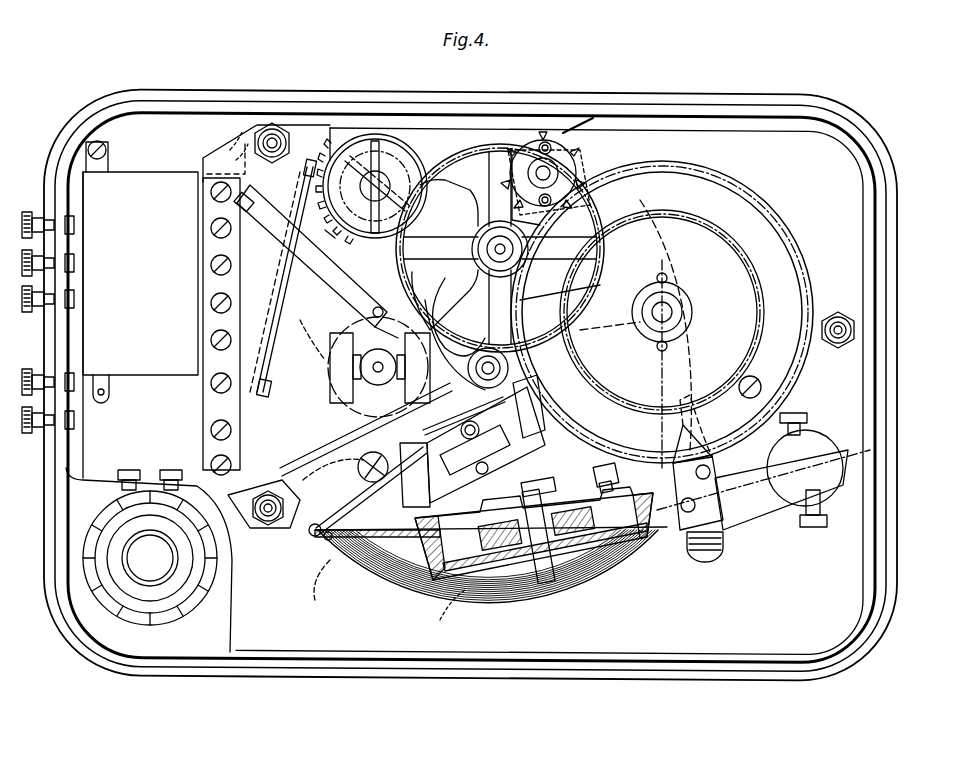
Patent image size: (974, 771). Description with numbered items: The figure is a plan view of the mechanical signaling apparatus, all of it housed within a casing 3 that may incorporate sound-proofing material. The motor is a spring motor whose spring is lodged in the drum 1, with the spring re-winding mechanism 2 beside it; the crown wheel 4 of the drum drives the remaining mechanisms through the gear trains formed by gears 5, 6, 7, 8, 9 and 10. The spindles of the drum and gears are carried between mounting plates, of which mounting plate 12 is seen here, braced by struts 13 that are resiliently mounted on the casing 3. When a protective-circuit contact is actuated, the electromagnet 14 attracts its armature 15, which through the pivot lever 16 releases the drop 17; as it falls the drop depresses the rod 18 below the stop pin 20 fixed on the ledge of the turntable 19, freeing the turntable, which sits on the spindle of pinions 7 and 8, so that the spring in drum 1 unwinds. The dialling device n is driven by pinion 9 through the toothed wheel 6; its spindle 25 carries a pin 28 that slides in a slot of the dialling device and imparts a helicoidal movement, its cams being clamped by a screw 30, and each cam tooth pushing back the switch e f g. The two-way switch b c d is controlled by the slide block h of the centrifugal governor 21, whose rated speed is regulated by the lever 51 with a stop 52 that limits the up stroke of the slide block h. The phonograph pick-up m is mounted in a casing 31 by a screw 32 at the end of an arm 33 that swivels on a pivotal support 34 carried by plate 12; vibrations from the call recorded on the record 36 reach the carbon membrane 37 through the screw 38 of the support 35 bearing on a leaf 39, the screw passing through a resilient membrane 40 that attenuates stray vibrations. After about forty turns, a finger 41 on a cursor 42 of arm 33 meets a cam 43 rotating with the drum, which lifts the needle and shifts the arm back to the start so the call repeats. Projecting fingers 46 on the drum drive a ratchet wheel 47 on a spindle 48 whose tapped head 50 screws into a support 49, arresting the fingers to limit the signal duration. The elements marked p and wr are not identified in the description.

The drum 1 is at (760, 228).
The spring re-winding mechanism 2 is at (722, 220).
The casing 3 is at (732, 108).
The crown wheel 4 is at (658, 166).
The gear 5 is at (485, 238).
The toothed wheel 6 is at (478, 146).
The pinion 7 is at (484, 350).
The pinion 8 is at (459, 317).
The pinion 9 is at (364, 148).
The gear train 10 is at (378, 368).
The mounting plate 12 is at (853, 202).
The strut 13 is at (268, 122).
The electromagnet 14 is at (484, 384).
The armature 15 is at (545, 442).
The pivot lever 16 is at (410, 492).
The drop 17 is at (344, 536).
The rod 18 is at (312, 536).
The turntable 19 is at (432, 582).
The stop pin 20 is at (328, 541).
The centrifugal governor 21 is at (369, 377).
The spindle 25 is at (385, 170).
The pin 28 is at (376, 236).
The screw 30 is at (417, 183).
The casing 31 is at (448, 621).
The screw 32 is at (670, 470).
The arm 33 is at (752, 490).
The pivotal support 34 is at (828, 512).
The support 35 is at (590, 560).
The record 36 is at (392, 580).
The carbon membrane 37 is at (520, 575).
The screw 38 is at (550, 565).
The leaf 39 is at (600, 555).
The resilient membrane 40 is at (632, 532).
The finger 41 is at (690, 420).
The cursor 42 is at (706, 562).
The cam 43 is at (748, 376).
The projecting finger 46 is at (545, 246).
The ratchet wheel 47 is at (575, 190).
The spindle 48 is at (536, 148).
The support 49 is at (560, 160).
The tapped head 50 is at (552, 168).
The lever 51 is at (236, 515).
The stop 52 is at (376, 456).
The switch contact b is at (238, 202).
The switch contact c is at (238, 140).
The switch contact d is at (317, 252).
The switch contact e is at (313, 202).
The switch contact f is at (302, 186).
The switch contact g is at (315, 320).
The slide block h is at (335, 320).
The phonograph pick-up m is at (480, 581).
The dialling device n is at (330, 128).
The dial p is at (200, 578).
The wiring block wr is at (130, 370).